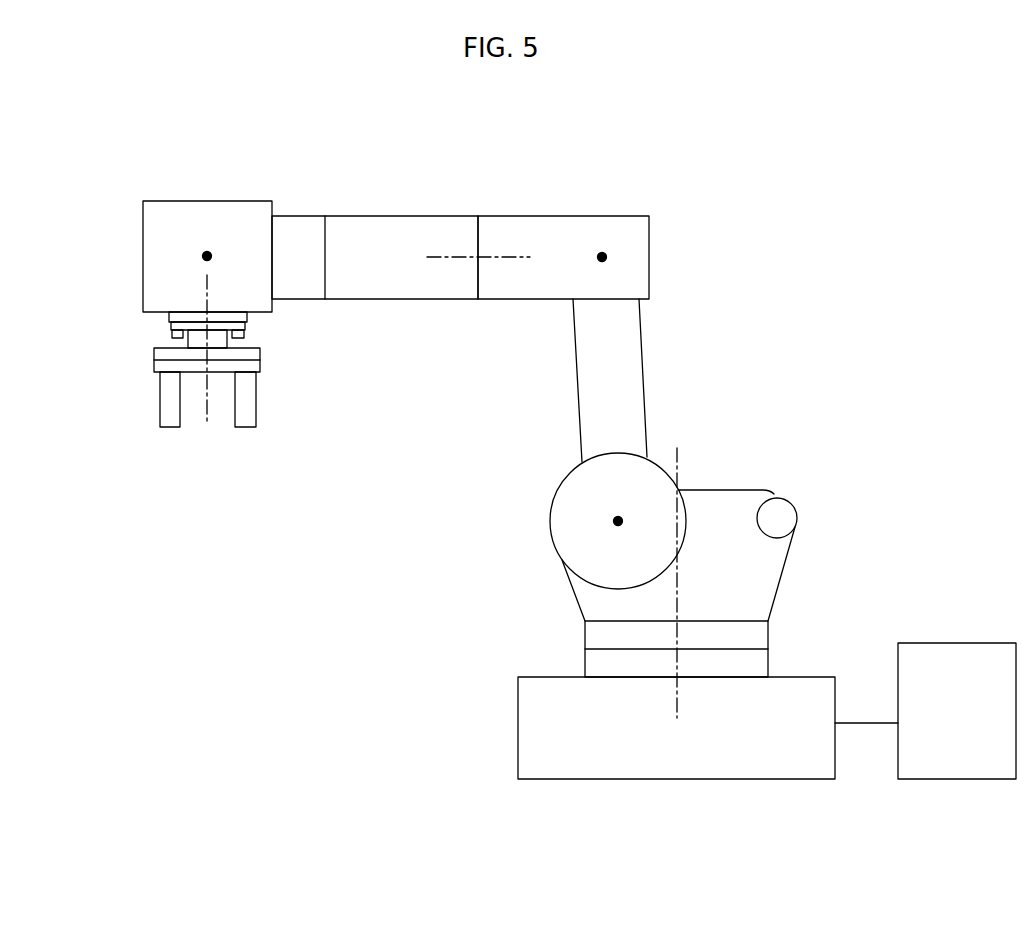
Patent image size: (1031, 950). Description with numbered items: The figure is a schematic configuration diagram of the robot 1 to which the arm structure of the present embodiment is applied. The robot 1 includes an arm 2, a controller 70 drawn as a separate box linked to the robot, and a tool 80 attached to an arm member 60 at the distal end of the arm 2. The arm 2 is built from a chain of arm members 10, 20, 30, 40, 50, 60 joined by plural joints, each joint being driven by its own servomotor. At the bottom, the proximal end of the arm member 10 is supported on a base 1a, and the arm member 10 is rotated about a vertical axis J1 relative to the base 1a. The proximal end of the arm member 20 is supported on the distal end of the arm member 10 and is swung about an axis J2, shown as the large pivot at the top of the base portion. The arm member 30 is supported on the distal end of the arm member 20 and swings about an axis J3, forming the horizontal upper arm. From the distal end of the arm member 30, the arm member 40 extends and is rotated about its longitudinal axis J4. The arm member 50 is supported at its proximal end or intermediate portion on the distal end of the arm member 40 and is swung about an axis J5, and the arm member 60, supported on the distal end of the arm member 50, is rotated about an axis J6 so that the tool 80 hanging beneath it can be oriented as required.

The robot 1 is at (713, 152).
The base 1a is at (518, 723).
The arm 2 is at (624, 216).
The arm member 10 is at (790, 543).
The arm member 20 is at (645, 373).
The arm member 30 is at (578, 216).
The arm member 40 is at (391, 300).
The arm member 50 is at (168, 201).
The arm member 60 is at (185, 343).
The controller 70 is at (952, 643).
The tool 80 is at (154, 363).
The axis J1 is at (677, 591).
The axis J2 is at (614, 522).
The axis J3 is at (606, 257).
The axis J4 is at (505, 257).
The axis J5 is at (207, 252).
The axis J6 is at (207, 298).